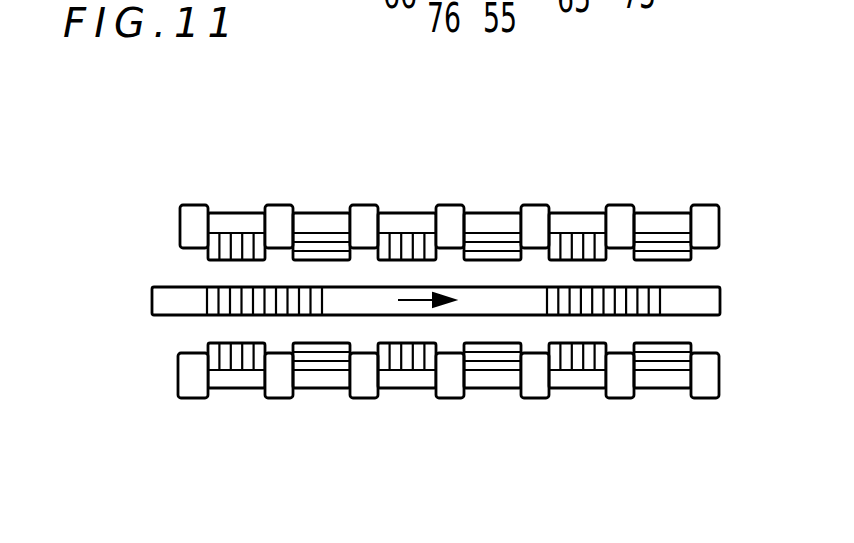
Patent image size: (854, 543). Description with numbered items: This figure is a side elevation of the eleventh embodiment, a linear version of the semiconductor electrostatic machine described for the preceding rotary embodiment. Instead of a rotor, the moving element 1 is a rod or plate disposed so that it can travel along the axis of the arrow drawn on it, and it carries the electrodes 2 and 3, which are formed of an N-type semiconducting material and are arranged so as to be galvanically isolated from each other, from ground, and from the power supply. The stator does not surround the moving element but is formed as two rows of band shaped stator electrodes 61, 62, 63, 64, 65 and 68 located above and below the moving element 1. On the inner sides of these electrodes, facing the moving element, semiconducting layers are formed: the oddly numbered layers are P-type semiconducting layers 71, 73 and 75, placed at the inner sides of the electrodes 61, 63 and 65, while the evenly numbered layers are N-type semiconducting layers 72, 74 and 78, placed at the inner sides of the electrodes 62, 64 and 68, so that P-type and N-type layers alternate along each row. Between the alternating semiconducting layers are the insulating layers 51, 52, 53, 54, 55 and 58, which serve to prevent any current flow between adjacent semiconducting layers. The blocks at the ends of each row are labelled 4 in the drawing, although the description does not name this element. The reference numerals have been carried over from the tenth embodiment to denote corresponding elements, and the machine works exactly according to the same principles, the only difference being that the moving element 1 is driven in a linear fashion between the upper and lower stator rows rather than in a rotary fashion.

The moving element 1 is at (153, 316).
The rotor electrode 2 is at (227, 293).
The rotor electrode 3 is at (650, 288).
The end frame block 4 is at (722, 218).
The insulating layer 51 is at (363, 212).
The insulating layer 52 is at (449, 212).
The insulating layer 53 is at (534, 212).
The insulating layer 54 is at (619, 212).
The insulating layer 55 is at (704, 212).
The insulating layer 58 is at (278, 212).
The stator electrode 61 is at (340, 218).
The stator electrode 62 is at (425, 218).
The stator electrode 63 is at (511, 218).
The stator electrode 64 is at (596, 218).
The stator electrode 65 is at (681, 218).
The stator electrode 68 is at (255, 218).
The P-type semiconducting layer 71 is at (313, 228).
The N-type semiconducting layer 72 is at (398, 228).
The P-type semiconducting layer 73 is at (484, 228).
The N-type semiconducting layer 74 is at (569, 228).
The P-type semiconducting layer 75 is at (654, 228).
The N-type semiconducting layer 78 is at (228, 228).